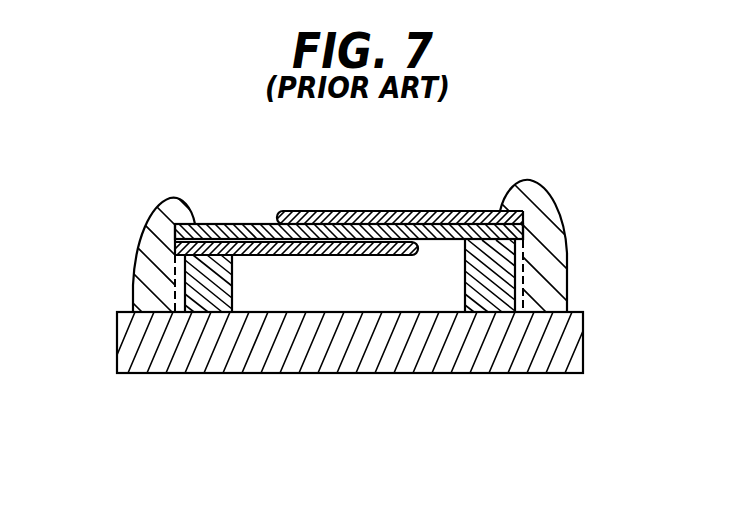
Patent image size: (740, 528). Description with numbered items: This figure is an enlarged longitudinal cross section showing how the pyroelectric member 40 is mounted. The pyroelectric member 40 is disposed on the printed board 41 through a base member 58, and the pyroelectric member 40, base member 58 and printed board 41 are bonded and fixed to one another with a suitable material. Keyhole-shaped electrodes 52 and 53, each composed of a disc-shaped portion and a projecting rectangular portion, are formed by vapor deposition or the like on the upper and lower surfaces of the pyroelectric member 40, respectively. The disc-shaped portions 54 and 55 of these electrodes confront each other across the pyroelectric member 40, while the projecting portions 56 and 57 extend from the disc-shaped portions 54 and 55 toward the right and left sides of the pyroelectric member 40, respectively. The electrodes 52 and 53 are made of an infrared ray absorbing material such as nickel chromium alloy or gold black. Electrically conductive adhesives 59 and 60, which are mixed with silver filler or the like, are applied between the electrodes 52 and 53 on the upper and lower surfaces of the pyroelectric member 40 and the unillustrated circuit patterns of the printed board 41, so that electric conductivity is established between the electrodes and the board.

The pyroelectric member 40 is at (250, 224).
The printed board 41 is at (555, 353).
The electrode 52 is at (398, 211).
The electrode 53 is at (288, 257).
The disc-shaped portion 54 is at (332, 211).
The disc-shaped portion 55 is at (362, 257).
The projecting portion 56 is at (467, 211).
The projecting portion 57 is at (252, 257).
The base member 58 is at (493, 290).
The electrically conductive adhesive 59 is at (543, 261).
The electrically conductive adhesive 60 is at (157, 278).